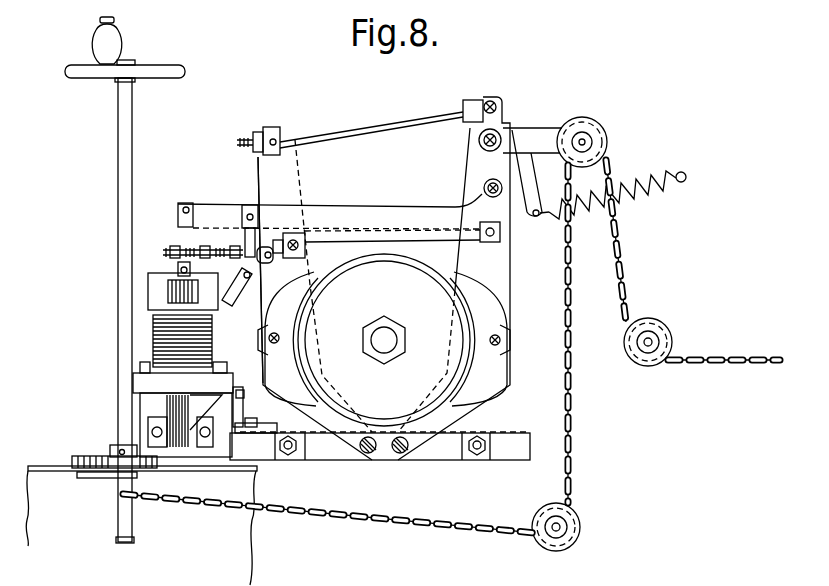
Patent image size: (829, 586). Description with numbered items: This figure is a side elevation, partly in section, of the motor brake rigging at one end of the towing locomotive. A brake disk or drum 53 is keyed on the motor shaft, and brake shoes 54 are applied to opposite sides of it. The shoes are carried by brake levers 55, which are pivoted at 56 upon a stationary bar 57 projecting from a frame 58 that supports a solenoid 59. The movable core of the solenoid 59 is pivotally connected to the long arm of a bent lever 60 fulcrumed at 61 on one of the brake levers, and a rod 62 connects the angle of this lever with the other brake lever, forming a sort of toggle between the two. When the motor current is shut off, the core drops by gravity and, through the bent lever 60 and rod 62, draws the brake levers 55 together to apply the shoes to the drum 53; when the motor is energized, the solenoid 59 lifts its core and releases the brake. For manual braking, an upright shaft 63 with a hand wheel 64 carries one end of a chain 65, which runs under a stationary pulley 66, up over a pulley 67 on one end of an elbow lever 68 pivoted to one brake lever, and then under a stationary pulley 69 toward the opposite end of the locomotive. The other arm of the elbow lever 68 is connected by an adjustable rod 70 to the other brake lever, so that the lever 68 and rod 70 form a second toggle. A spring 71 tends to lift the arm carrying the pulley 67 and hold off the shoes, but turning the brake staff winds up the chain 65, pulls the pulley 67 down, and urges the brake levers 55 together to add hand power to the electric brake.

The brake disk or drum 53 is at (384, 340).
The brake shoes 54 is at (273, 322).
The brake levers 55 is at (293, 185).
The pivots 56 is at (400, 455).
The stationary bar 57 is at (503, 460).
The frame 58 is at (205, 409).
The solenoid 59 is at (214, 342).
The bent lever 60 is at (381, 206).
The fulcrum 61 is at (484, 189).
The rod 62 is at (347, 238).
The upright shaft 63 is at (118, 201).
The hand wheel 64 is at (165, 78).
The chain 65 is at (305, 522).
The stationary pulley 66 is at (550, 549).
The pulley 67 is at (602, 128).
The elbow lever 68 is at (540, 132).
The stationary pulley 69 is at (673, 332).
The rod 70 is at (378, 124).
The spring 71 is at (636, 196).